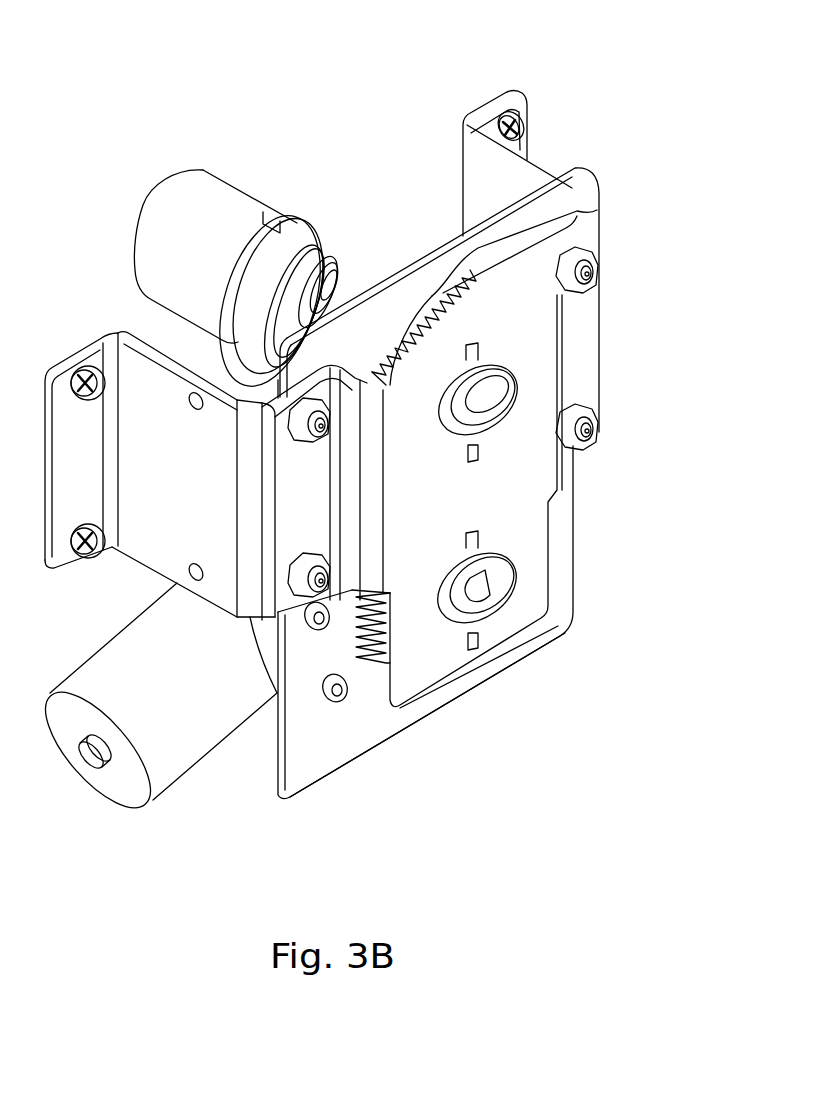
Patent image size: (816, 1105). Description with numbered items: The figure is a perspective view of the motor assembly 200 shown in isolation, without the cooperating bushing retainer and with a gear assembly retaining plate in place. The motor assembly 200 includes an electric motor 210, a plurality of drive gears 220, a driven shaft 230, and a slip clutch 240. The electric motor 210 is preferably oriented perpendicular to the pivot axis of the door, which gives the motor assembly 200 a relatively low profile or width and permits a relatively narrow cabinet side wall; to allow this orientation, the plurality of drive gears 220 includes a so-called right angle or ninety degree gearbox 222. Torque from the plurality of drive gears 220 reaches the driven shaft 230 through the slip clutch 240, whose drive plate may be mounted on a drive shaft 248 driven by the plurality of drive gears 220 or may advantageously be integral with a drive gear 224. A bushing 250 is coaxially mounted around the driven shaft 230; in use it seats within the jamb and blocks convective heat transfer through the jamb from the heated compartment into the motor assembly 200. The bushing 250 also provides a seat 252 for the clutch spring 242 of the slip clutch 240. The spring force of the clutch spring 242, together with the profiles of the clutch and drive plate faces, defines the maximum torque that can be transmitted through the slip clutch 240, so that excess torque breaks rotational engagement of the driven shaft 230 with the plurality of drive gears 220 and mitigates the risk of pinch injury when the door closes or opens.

The motor assembly 200 is at (101, 34).
The electric motor 210 is at (192, 730).
The plurality of drive gears 220 is at (373, 655).
The right angle gearbox 222 is at (277, 703).
The drive gear 224 is at (572, 200).
The driven shaft 230 is at (374, 282).
The slip clutch 240 is at (381, 226).
The clutch spring 242 is at (343, 258).
The drive shaft 248 is at (483, 393).
The bushing 250 is at (224, 190).
The seat 252 is at (317, 250).